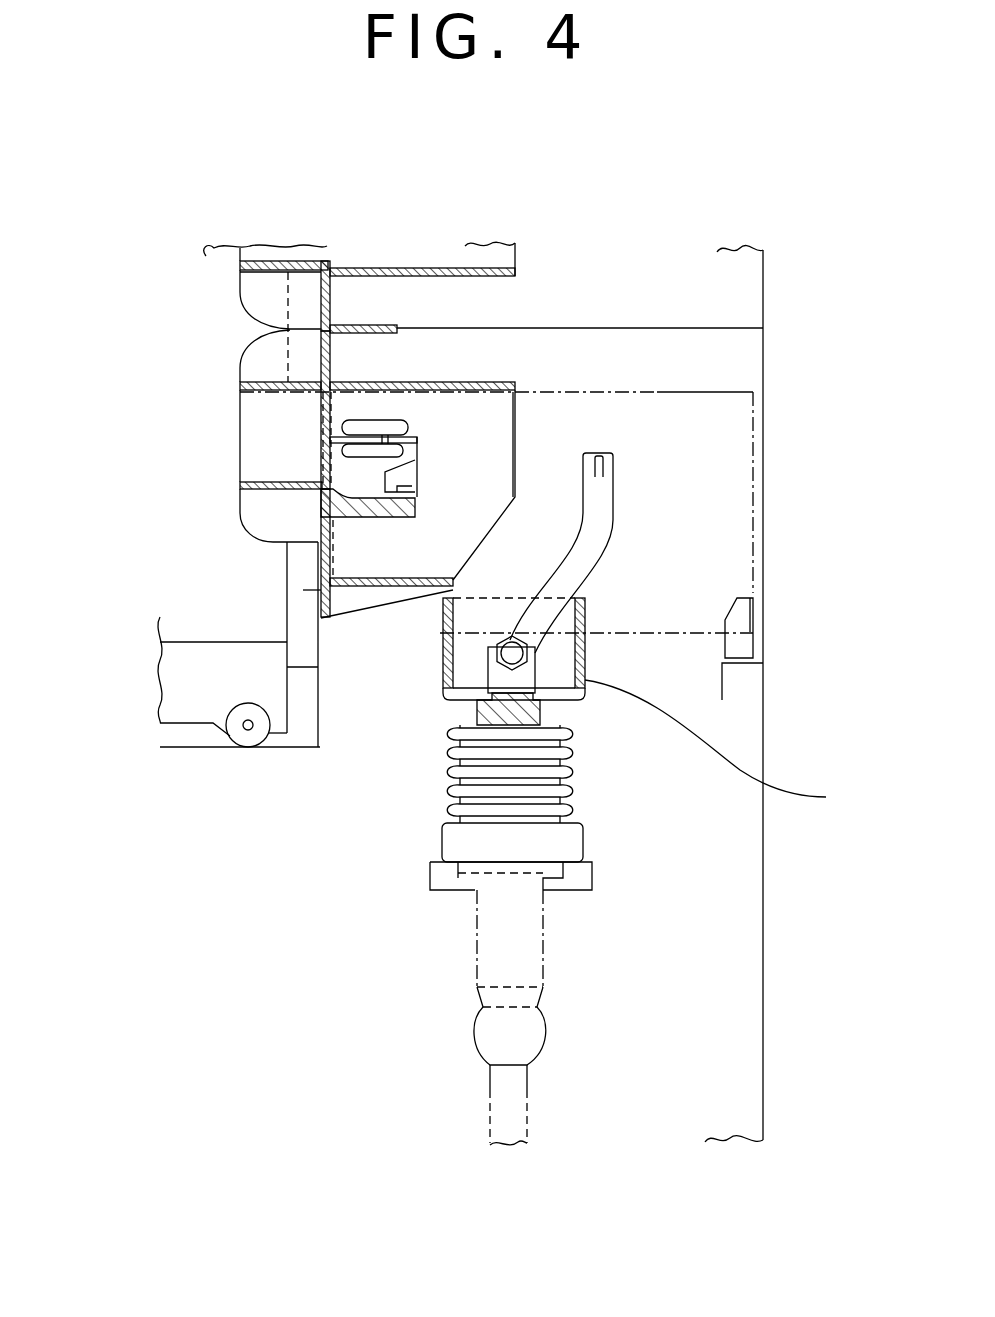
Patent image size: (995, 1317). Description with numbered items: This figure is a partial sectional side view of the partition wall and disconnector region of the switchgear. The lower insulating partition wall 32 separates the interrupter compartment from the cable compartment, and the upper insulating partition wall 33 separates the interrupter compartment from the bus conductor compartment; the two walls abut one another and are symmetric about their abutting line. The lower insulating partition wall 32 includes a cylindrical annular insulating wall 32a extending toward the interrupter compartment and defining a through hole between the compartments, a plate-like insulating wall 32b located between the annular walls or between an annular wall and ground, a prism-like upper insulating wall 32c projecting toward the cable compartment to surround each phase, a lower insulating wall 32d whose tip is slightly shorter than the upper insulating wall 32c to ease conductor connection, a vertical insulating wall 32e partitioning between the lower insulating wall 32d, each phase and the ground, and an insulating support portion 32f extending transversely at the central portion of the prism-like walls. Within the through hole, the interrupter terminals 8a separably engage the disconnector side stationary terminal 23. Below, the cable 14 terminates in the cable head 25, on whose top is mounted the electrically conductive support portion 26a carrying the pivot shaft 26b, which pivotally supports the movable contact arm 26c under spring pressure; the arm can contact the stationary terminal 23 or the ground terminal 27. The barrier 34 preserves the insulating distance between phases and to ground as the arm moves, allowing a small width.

The terminal 8a is at (385, 421).
The disconnector side stationary terminal 23 is at (420, 462).
The upper insulating wall 32c is at (490, 384).
The vertical insulating wall 32e is at (518, 458).
The upper insulating partition wall 33 is at (240, 290).
The barrier 34 is at (723, 392).
The lower insulating partition wall 32 is at (240, 450).
The movable contact arm 26c is at (613, 495).
The annular insulating wall 32a is at (262, 490).
The plate-like insulating wall 32b is at (246, 520).
The ground terminal 27 is at (743, 650).
The insulating support portion 32f is at (370, 518).
The pivot shaft 26b is at (535, 655).
The lower insulating wall 32d is at (397, 590).
The support portion 26a is at (663, 706).
The cable head 25 is at (577, 812).
The cable 14 is at (543, 962).